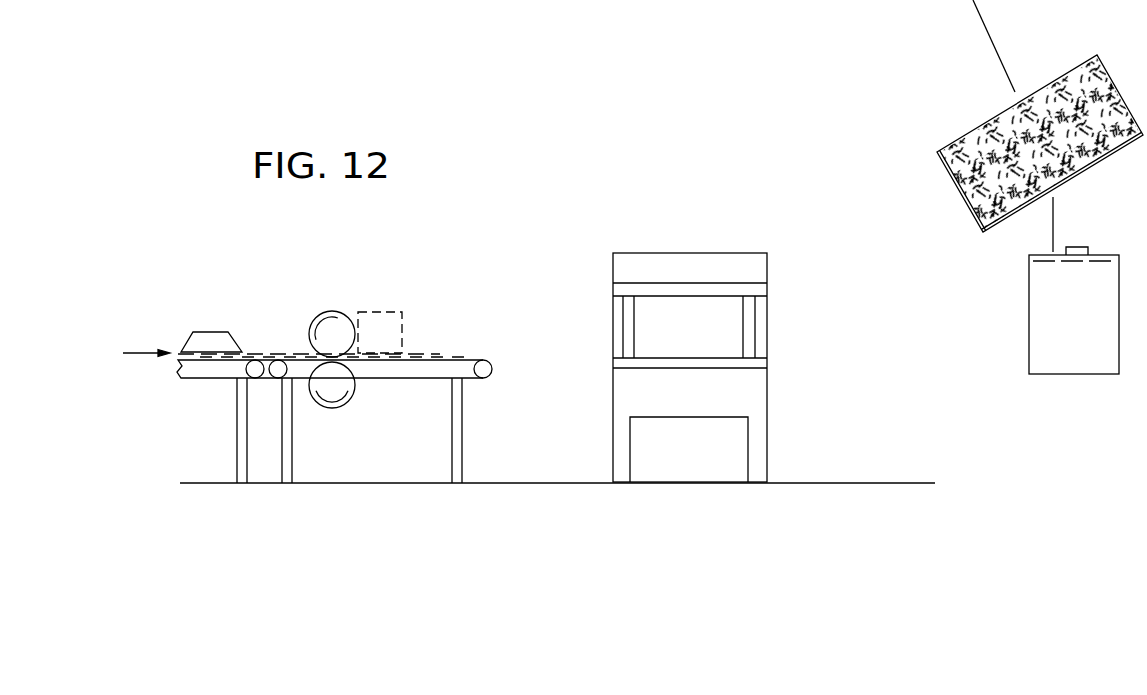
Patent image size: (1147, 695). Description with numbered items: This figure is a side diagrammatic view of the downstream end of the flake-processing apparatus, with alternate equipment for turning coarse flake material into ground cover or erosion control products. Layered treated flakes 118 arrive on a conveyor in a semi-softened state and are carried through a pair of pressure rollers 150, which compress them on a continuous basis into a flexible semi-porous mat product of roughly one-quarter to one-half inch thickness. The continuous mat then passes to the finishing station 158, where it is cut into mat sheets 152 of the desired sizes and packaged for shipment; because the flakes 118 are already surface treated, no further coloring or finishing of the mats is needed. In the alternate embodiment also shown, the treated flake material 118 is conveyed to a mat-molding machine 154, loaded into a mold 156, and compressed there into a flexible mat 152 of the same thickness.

The layered treated flakes 118 is at (182, 352).
The pressure rollers 150 is at (330, 308).
The mat sheets 152 is at (434, 357).
The mat-molding machine 154 is at (675, 252).
The mold 156 is at (1029, 325).
The finishing station 158 is at (404, 313).